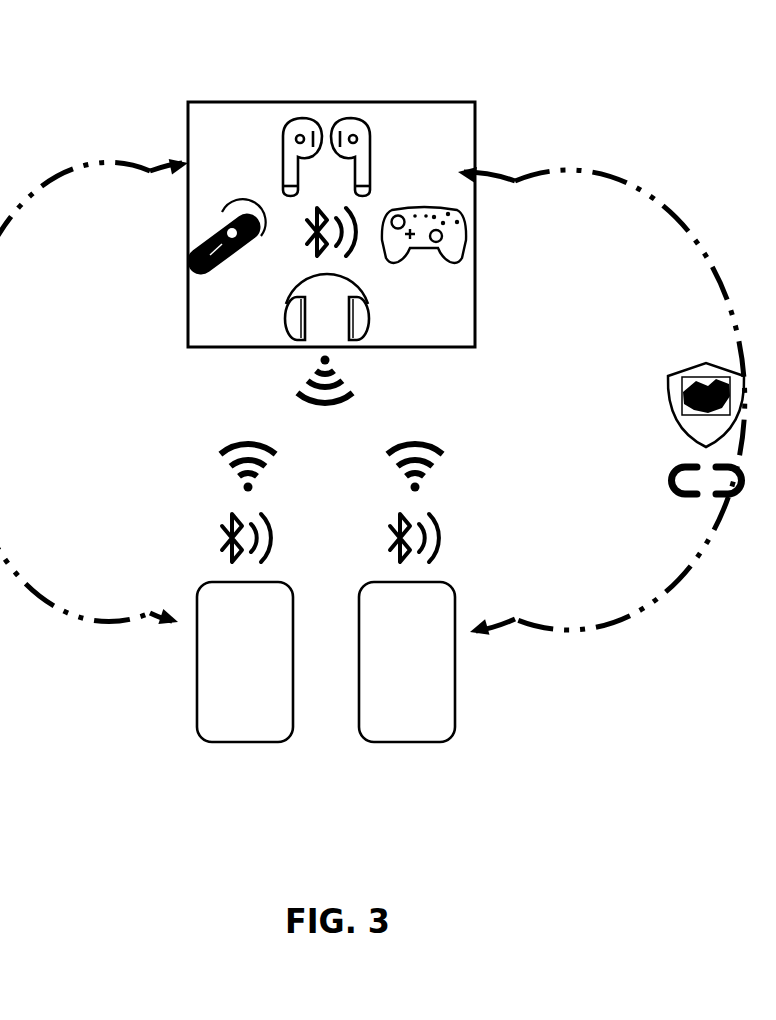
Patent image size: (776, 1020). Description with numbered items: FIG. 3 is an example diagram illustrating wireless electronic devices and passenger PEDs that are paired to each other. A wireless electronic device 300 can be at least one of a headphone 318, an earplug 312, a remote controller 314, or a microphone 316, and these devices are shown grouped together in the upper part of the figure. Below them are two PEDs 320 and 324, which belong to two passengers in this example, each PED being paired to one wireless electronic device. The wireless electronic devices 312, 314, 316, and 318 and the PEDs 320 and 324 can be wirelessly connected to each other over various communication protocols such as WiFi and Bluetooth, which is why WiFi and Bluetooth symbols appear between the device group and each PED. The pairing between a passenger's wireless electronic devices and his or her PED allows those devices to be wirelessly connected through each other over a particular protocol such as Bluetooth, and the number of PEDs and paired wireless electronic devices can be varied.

The wireless electronic device 300 is at (226, 92).
The earplug 312 is at (380, 117).
The remote controller 314 is at (458, 274).
The microphone 316 is at (200, 285).
The headphone 318 is at (378, 329).
The PED 320 is at (190, 760).
The PED 324 is at (460, 761).